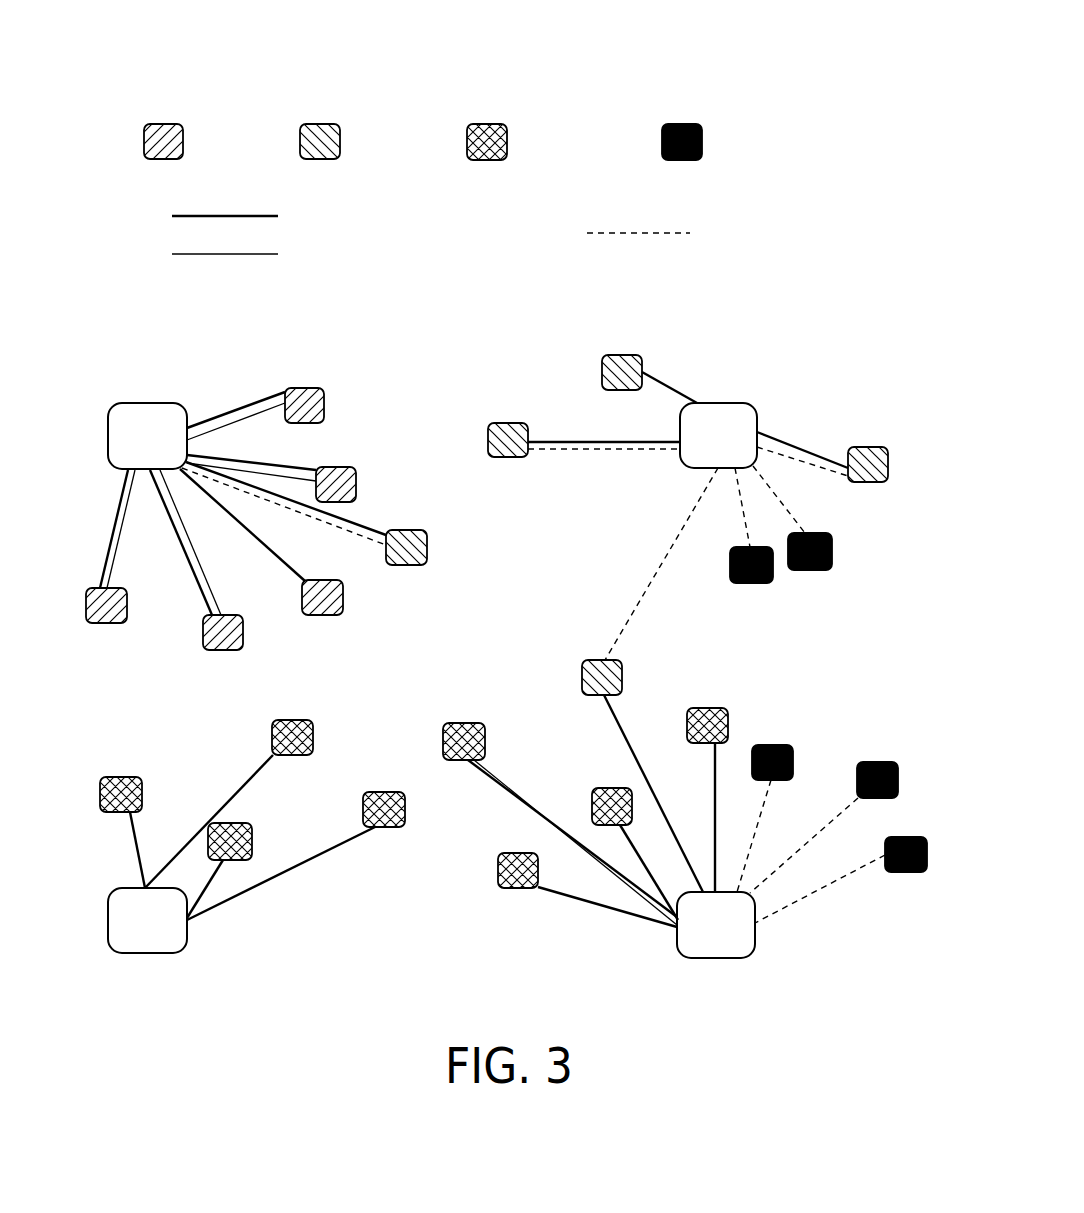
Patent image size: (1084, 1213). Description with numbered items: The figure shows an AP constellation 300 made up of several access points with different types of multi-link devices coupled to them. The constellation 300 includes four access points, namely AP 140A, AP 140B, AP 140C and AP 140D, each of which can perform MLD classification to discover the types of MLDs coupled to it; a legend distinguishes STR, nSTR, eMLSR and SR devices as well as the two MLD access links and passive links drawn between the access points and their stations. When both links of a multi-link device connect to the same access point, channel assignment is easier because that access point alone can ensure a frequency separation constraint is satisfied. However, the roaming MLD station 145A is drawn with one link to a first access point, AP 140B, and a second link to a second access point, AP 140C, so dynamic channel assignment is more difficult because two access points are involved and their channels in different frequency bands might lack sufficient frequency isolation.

The AP constellation 300 is at (842, 82).
The AP 140A is at (153, 403).
The AP 140B is at (718, 403).
The AP 140C is at (717, 958).
The AP 140D is at (147, 953).
The MLD station 145A is at (622, 680).